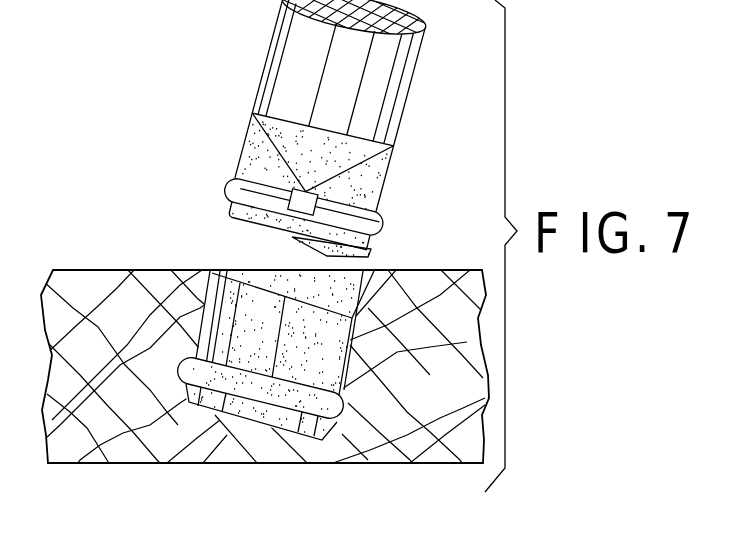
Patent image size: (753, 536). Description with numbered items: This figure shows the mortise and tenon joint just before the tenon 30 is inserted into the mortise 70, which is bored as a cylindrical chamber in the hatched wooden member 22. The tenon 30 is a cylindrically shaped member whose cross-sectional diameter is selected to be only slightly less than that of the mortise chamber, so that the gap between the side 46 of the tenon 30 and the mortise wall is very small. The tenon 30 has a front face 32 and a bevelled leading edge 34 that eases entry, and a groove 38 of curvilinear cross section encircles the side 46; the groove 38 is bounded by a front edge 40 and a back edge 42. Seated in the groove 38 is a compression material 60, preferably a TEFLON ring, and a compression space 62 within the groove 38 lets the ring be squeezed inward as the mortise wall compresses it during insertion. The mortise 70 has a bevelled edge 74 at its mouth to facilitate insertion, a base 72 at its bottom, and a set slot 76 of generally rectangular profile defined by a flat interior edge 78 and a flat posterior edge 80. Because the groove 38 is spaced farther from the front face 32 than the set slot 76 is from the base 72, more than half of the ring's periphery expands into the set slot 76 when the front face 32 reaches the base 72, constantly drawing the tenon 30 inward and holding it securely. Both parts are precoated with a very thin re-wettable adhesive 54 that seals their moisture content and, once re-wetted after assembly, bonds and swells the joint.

The base panel 22 is at (100, 282).
The tenon 30 is at (281, 47).
The front face 32 is at (372, 216).
The leading edge 34 is at (231, 207).
The groove 38 is at (292, 188).
The front edge 40 is at (295, 232).
The back edge 42 is at (305, 188).
The side 46 is at (248, 125).
The re-wettable adhesive 54 is at (363, 181).
The compression material 60 is at (222, 182).
The compression space 62 is at (316, 196).
The mortise 70 is at (235, 267).
The base 72 is at (230, 404).
The bevelled edge 74 is at (373, 273).
The set slot 76 is at (362, 412).
The interior edge 78 is at (336, 402).
The posterior edge 80 is at (329, 432).